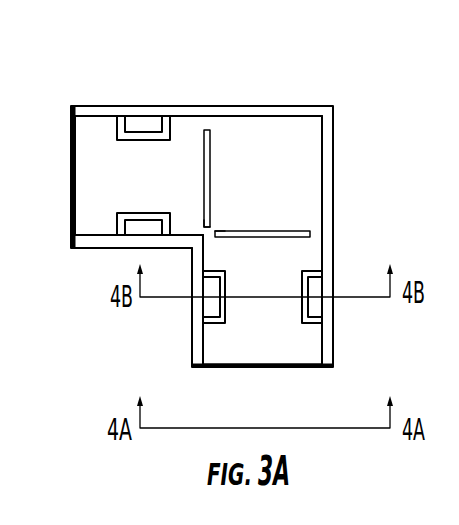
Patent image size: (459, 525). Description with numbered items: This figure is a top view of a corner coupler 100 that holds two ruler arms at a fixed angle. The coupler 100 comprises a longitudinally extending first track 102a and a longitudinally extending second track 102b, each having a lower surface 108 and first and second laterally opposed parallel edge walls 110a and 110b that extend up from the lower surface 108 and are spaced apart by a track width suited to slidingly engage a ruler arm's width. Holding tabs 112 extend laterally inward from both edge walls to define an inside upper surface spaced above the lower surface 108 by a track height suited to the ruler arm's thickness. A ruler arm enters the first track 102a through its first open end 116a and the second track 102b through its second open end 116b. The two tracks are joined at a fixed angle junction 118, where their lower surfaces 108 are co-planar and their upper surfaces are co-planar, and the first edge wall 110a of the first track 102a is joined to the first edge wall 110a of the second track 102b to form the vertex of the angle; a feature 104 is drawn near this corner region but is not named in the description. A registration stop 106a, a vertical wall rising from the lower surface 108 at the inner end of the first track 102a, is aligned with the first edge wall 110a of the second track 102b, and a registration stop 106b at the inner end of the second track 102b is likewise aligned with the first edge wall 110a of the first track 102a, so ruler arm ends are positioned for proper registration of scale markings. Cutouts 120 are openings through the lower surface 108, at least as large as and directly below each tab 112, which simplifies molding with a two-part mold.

The coupler 100 is at (138, 36).
The first track 102a is at (335, 363).
The second track 102b is at (82, 106).
The inner corner junction 104 is at (192, 249).
The registration stop 106a is at (268, 231).
The registration stop 106b is at (210, 180).
The lower surface 108 is at (99, 150).
The first edge wall 110a is at (97, 236).
The second edge wall 110b is at (92, 120).
The holding tabs 112 is at (140, 116).
The first open end 116a is at (269, 380).
The second open end 116b is at (54, 198).
The fixed angle junction 118 is at (205, 236).
The cutouts 120 is at (173, 122).